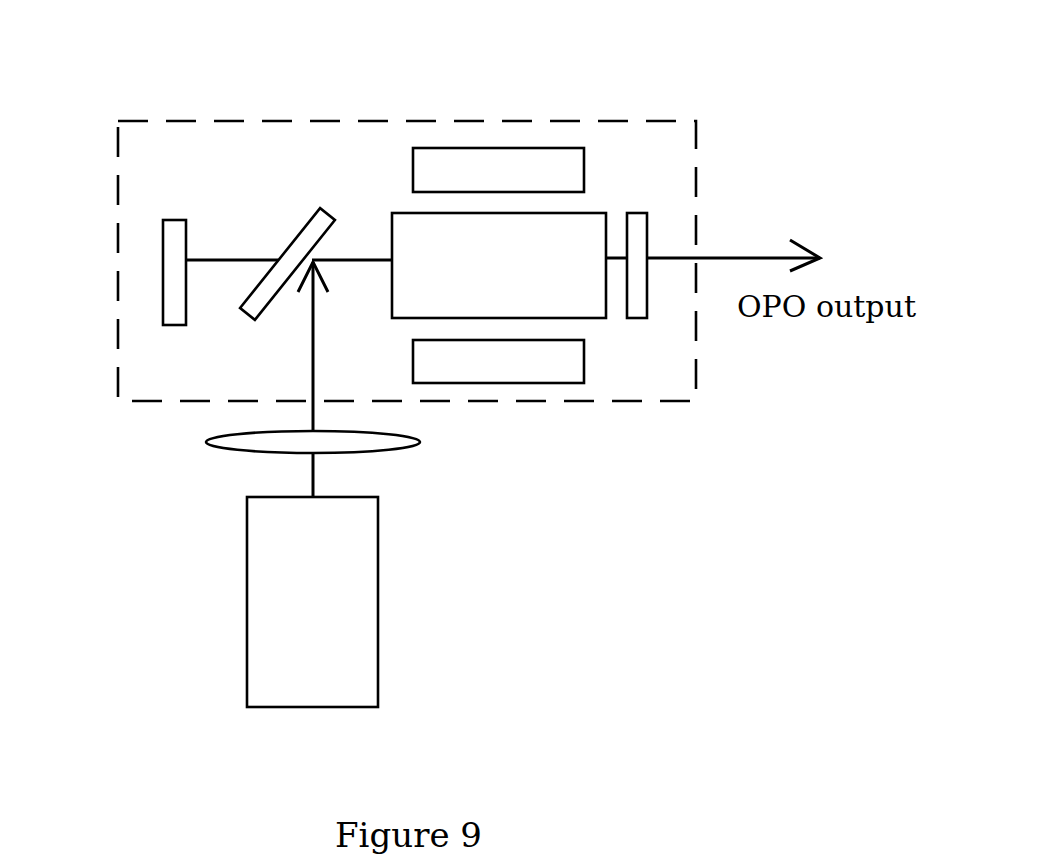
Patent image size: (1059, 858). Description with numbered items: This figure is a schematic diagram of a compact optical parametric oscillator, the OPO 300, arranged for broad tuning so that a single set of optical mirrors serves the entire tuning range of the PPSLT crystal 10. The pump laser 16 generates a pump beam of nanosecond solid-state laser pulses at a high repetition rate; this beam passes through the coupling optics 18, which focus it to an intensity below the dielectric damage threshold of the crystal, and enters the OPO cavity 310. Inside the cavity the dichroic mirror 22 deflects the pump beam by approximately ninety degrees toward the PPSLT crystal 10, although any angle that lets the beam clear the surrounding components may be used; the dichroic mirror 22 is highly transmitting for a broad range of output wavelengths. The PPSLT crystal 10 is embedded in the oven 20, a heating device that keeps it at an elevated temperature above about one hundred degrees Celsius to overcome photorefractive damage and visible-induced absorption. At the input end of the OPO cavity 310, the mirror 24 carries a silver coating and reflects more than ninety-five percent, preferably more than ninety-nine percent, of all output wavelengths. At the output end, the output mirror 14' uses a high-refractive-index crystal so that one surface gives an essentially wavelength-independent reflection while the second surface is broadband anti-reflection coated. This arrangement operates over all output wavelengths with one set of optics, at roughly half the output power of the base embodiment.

The OPO 300 is at (387, 72).
The OPO cavity 310 is at (620, 122).
The PPSLT crystal 10 is at (582, 308).
The output mirror 14' is at (704, 259).
The pump laser 16 is at (253, 598).
The coupling optics 18 is at (222, 446).
The oven 20 is at (550, 155).
The dichroic mirror 22 is at (320, 218).
The mirror 24 is at (176, 304).